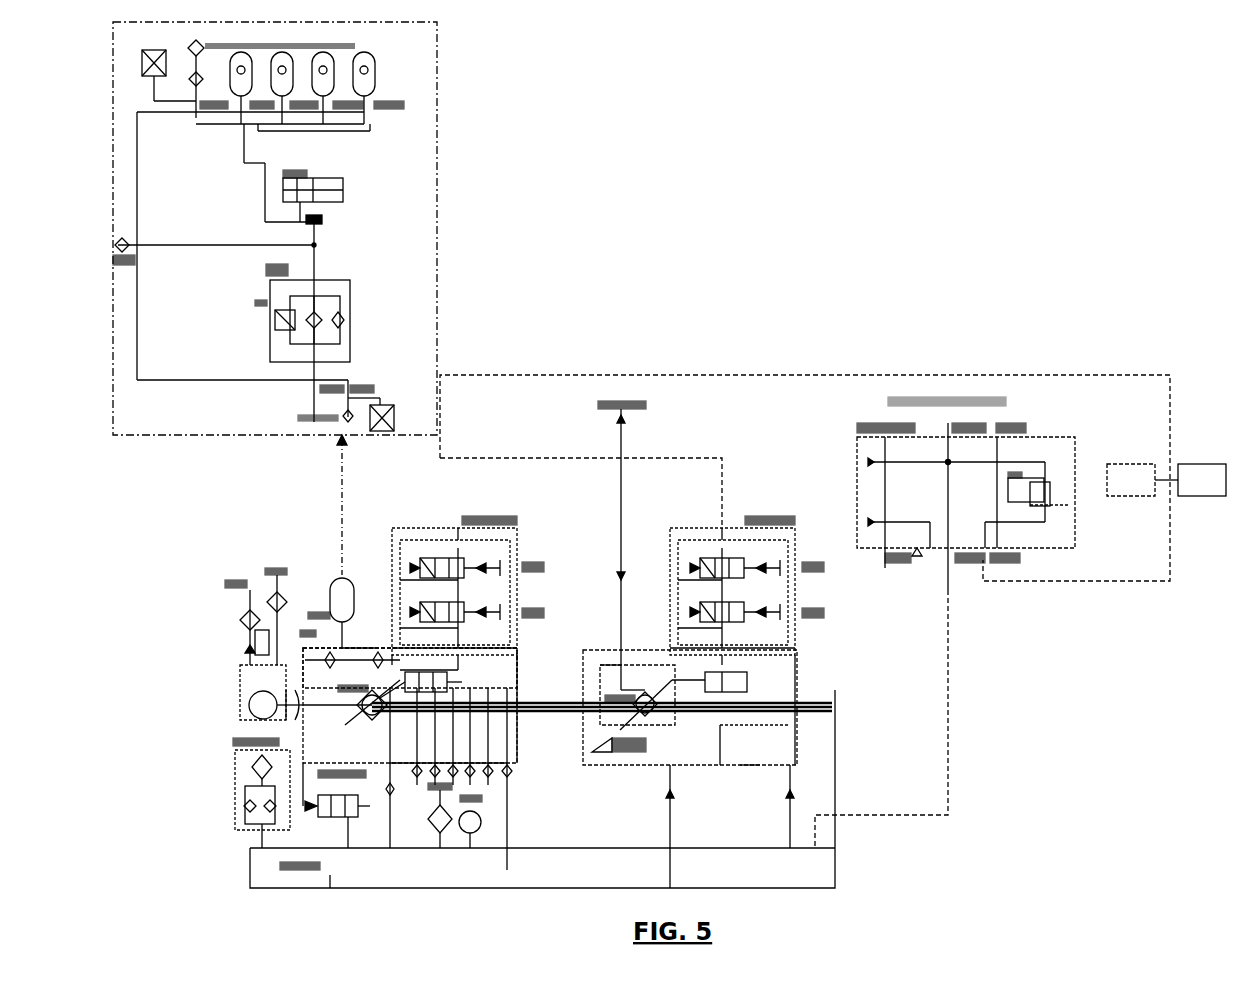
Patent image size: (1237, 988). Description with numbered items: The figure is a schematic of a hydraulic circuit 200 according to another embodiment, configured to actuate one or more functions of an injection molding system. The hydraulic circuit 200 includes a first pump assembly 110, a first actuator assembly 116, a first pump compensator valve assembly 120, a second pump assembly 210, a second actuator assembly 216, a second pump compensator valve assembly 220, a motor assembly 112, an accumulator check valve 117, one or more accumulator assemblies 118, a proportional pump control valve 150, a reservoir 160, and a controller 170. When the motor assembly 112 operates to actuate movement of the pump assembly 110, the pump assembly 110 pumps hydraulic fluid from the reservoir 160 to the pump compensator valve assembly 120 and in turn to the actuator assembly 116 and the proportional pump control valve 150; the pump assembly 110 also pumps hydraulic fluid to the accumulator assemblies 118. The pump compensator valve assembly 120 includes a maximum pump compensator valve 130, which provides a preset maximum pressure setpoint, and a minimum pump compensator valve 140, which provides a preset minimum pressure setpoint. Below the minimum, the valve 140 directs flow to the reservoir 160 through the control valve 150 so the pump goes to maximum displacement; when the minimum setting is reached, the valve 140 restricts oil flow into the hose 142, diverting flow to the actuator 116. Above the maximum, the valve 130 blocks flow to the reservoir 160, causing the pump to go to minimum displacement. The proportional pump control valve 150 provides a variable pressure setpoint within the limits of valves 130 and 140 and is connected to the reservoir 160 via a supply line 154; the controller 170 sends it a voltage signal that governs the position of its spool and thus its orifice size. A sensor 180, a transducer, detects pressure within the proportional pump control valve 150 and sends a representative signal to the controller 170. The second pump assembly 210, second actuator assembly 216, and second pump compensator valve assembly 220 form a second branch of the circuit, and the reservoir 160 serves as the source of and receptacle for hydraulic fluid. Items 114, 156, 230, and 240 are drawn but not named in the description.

The first pump assembly 110 is at (408, 696).
The motor assembly 112 is at (254, 644).
The filter 114 is at (438, 815).
The first actuator assembly 116 is at (375, 481).
The accumulator check valve 117 is at (322, 199).
The accumulator assemblies 118 is at (312, 131).
The first pump compensator valve assembly 120 is at (454, 581).
The maximum pump compensator valve 130 is at (494, 612).
The minimum pump compensator valve 140 is at (494, 568).
The hose 142 is at (805, 465).
The proportional pump control valve 150 is at (960, 492).
The supply line 154 is at (899, 719).
The valve spool 156 is at (915, 537).
The reservoir 160 is at (542, 789).
The controller 170 is at (1190, 480).
The sensor 180 is at (1131, 480).
The hydraulic circuit 200 is at (1084, 751).
The second pump assembly 210 is at (690, 706).
The second actuator assembly 216 is at (743, 682).
The second pump compensator valve assembly 220 is at (732, 581).
The third control valve 230 is at (762, 621).
The fourth control valve 240 is at (763, 556).